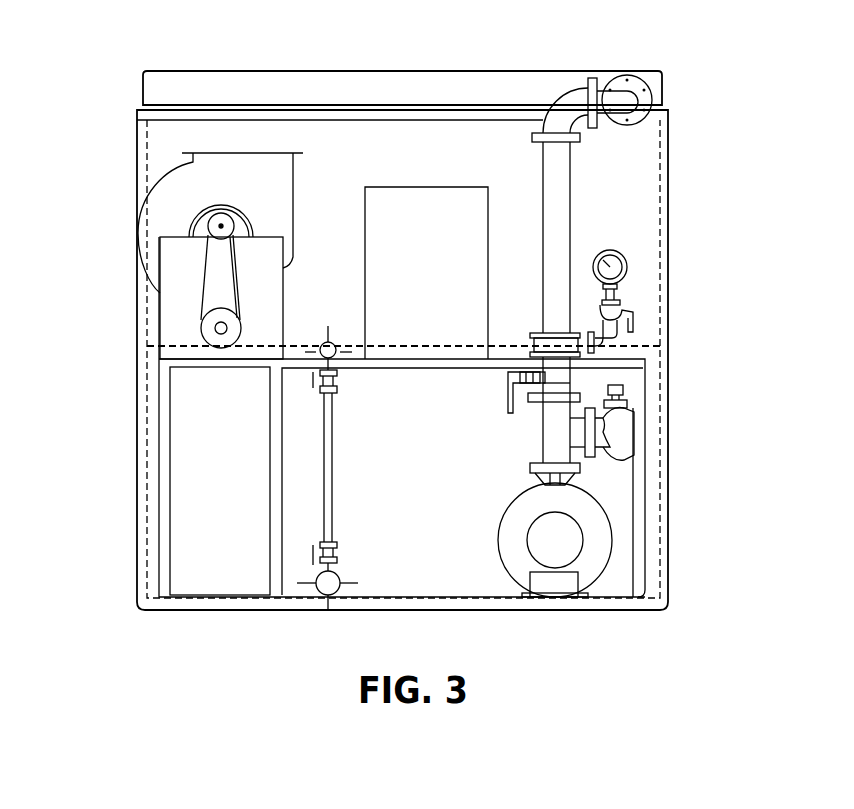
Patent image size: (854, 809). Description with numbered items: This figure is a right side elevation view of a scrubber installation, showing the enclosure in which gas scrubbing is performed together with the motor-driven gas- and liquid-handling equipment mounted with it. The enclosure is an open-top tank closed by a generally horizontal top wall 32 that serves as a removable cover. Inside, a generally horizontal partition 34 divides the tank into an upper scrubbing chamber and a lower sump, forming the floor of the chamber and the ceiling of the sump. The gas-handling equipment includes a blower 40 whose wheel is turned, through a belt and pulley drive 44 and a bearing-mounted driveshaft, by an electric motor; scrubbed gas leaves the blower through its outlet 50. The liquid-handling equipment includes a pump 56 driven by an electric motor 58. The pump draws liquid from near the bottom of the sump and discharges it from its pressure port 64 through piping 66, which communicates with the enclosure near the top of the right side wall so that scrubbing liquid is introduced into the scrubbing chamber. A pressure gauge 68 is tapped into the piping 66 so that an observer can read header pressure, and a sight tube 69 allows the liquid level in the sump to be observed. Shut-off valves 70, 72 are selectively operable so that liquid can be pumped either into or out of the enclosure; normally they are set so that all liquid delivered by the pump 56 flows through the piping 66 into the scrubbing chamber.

The top wall 32 is at (510, 88).
The partition 34 is at (413, 352).
The blower 40 is at (157, 177).
The belt and pulley drive 44 is at (205, 295).
The outlet 50 is at (247, 152).
The pump 56 is at (610, 530).
The electric motor 58 is at (595, 550).
The pressure port 64 is at (580, 472).
The piping 66 is at (557, 190).
The pressure gauge 68 is at (627, 267).
The sight tube 69 is at (333, 495).
The shut-off valve 70 is at (570, 380).
The shut-off valve 72 is at (594, 462).